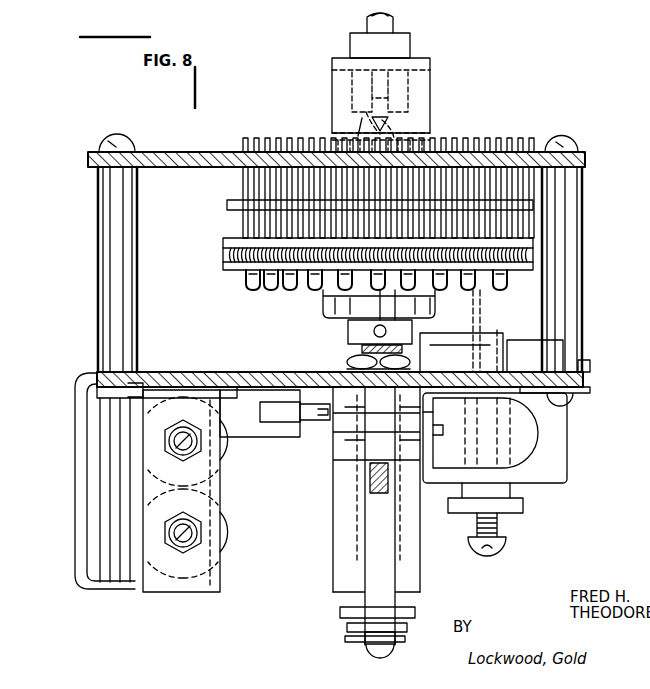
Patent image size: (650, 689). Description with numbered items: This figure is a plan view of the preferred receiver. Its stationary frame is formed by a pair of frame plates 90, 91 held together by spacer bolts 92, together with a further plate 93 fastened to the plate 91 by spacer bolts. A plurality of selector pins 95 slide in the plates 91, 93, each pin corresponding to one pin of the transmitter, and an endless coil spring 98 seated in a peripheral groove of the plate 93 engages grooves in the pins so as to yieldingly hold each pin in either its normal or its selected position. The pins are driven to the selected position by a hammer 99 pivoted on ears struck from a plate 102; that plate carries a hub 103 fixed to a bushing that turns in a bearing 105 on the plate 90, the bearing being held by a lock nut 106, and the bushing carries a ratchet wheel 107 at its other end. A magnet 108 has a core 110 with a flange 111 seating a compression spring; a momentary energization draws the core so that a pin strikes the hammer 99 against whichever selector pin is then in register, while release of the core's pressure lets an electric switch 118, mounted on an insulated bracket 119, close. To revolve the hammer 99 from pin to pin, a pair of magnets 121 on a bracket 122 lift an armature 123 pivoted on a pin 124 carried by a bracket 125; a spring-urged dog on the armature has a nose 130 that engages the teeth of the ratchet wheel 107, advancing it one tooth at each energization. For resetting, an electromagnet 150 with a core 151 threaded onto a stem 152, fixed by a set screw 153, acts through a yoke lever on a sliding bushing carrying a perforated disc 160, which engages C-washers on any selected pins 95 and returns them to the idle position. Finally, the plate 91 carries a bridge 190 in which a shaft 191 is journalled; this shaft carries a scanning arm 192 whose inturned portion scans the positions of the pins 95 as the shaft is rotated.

The frame plate 90 is at (585, 382).
The frame plate 91 is at (585, 156).
The spacer bolts 92 is at (108, 295).
The plate 93 is at (225, 268).
The selector pins 95 is at (270, 140).
The endless coil spring 98 is at (533, 256).
The hammer 99 is at (370, 304).
The plate 102 is at (330, 297).
The hub 103 is at (350, 330).
The bearing 105 is at (362, 349).
The lock nut 106 is at (348, 362).
The ratchet wheel 107 is at (325, 465).
The magnet 108 is at (415, 548).
The core 110 is at (345, 612).
The flange 111 is at (347, 627).
The electric switch 118 is at (400, 638).
The bracket 119 is at (360, 545).
The magnets 121 is at (225, 447).
The bracket 122 is at (147, 372).
The armature 123 is at (285, 455).
The pin 124 is at (110, 495).
The bracket 125 is at (80, 460).
The nose 130 is at (318, 428).
The electromagnet 150 is at (540, 452).
The core 151 is at (523, 506).
The stem 152 is at (490, 325).
The set screw 153 is at (505, 543).
The disc 160 is at (227, 205).
The bridge 190 is at (425, 60).
The shaft 191 is at (385, 28).
The scanning arm 192 is at (412, 103).